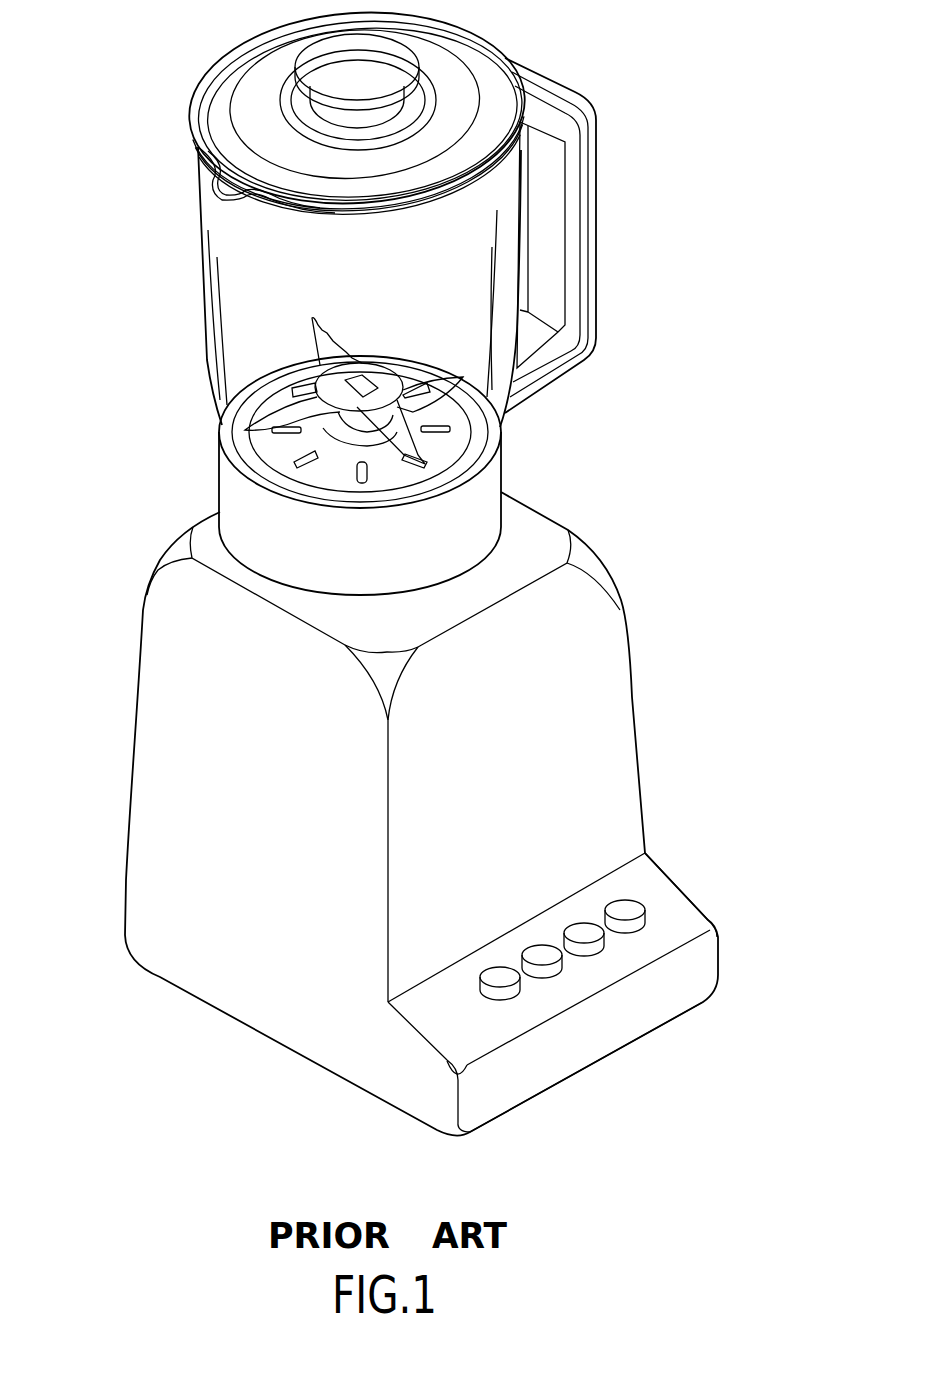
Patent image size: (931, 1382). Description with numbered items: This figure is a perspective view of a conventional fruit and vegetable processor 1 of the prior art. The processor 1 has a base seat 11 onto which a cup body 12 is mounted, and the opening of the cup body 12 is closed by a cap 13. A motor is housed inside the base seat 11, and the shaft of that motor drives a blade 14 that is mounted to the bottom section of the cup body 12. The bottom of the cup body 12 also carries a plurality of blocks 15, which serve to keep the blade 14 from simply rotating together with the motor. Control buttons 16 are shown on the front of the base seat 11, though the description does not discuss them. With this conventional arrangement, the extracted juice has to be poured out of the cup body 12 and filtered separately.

The fruit and vegetable processor 1 is at (118, 54).
The base seat 11 is at (632, 697).
The cup body 12 is at (215, 320).
The cap 13 is at (453, 50).
The blade 14 is at (267, 422).
The blocks 15 is at (287, 455).
The control buttons 16 is at (630, 903).